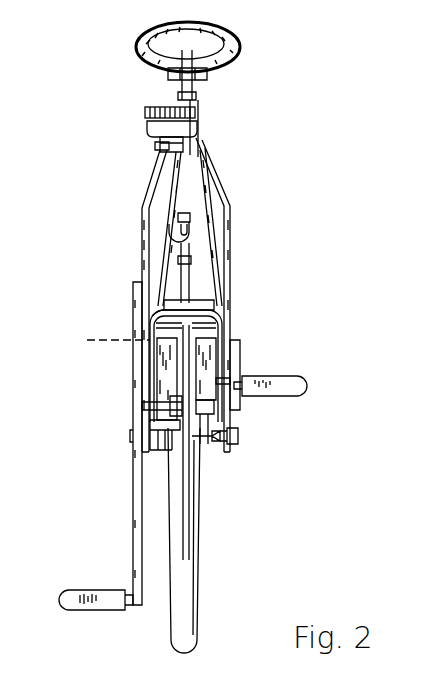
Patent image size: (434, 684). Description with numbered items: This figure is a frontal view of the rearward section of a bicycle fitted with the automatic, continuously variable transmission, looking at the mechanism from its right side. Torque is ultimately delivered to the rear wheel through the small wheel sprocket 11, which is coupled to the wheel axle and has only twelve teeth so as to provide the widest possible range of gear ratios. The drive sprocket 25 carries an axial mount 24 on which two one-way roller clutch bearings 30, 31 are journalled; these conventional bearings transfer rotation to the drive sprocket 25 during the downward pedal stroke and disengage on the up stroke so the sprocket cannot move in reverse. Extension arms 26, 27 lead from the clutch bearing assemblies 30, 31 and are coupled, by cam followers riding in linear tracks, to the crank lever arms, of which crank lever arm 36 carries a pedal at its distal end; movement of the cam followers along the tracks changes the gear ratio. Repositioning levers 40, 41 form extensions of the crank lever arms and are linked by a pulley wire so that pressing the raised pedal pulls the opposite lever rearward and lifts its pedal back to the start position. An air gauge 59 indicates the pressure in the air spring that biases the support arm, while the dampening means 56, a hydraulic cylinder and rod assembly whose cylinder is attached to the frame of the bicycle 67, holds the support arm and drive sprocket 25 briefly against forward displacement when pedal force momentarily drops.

The wheel sprocket 11 is at (158, 452).
The axial mount 24 is at (104, 339).
The drive sprocket 25 is at (160, 350).
The extension arm 26 is at (165, 398).
The extension arm 27 is at (218, 344).
The one-way roller clutch bearing 30 is at (226, 314).
The one-way roller clutch bearing 31 is at (152, 315).
The crank lever arm 36 is at (142, 580).
The repositioning lever 40 is at (138, 284).
The repositioning lever 41 is at (232, 366).
The dampening means 56 is at (190, 292).
The air gauge 59 is at (198, 124).
The bicycle frame 67 is at (165, 240).